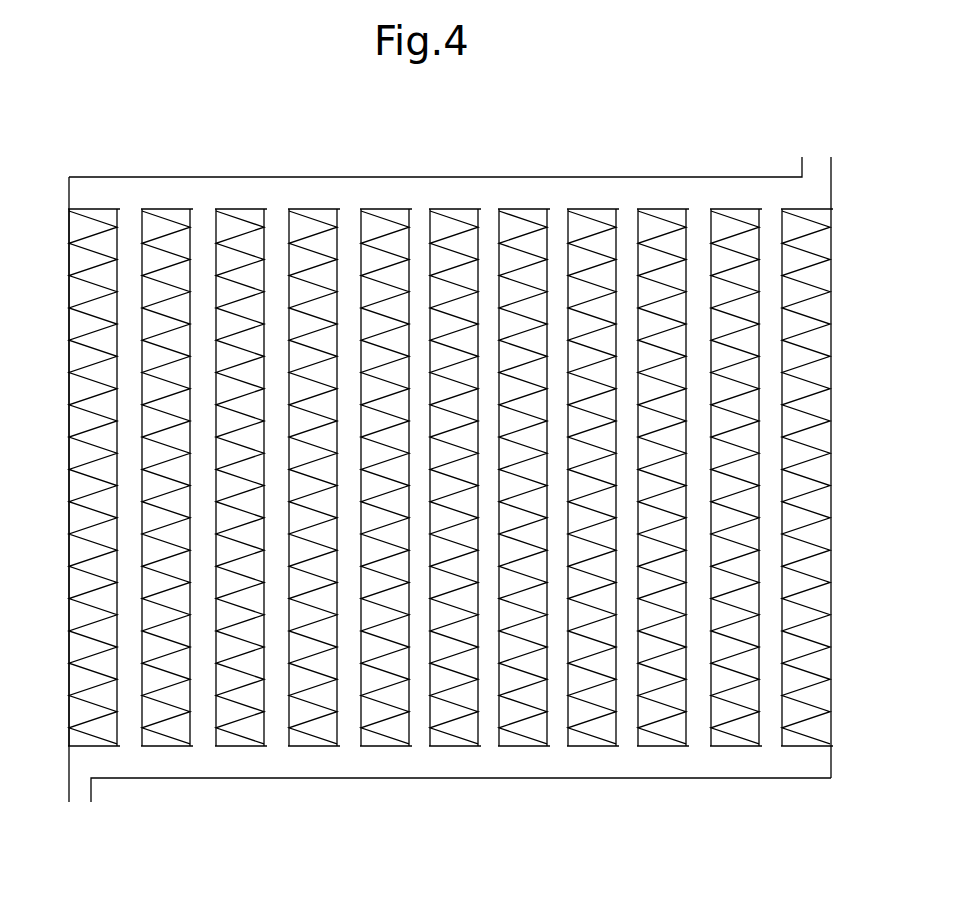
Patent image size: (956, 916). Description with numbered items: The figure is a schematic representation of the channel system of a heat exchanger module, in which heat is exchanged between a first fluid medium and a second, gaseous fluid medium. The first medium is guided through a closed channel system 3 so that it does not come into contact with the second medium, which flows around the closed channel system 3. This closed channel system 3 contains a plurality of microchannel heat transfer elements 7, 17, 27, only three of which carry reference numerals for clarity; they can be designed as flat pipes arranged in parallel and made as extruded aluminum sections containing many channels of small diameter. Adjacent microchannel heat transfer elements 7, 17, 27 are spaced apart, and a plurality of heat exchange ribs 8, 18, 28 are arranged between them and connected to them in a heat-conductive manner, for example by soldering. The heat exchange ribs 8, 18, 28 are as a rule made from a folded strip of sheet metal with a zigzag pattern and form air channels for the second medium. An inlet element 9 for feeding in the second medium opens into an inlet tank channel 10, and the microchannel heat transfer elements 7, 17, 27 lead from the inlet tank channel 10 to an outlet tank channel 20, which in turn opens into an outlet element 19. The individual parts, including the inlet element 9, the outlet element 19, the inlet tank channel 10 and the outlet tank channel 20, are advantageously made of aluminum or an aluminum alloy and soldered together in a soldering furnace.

The closed channel system 3 is at (433, 180).
The microchannel heat transfer element 7 is at (135, 217).
The heat exchange rib 8 is at (103, 221).
The inlet element 9 is at (810, 166).
The inlet tank channel 10 is at (618, 195).
The microchannel heat transfer element 17 is at (203, 218).
The heat exchange rib 18 is at (173, 222).
The outlet element 19 is at (67, 783).
The outlet tank channel 20 is at (622, 765).
The microchannel heat transfer element 27 is at (277, 227).
The heat exchange rib 28 is at (238, 233).